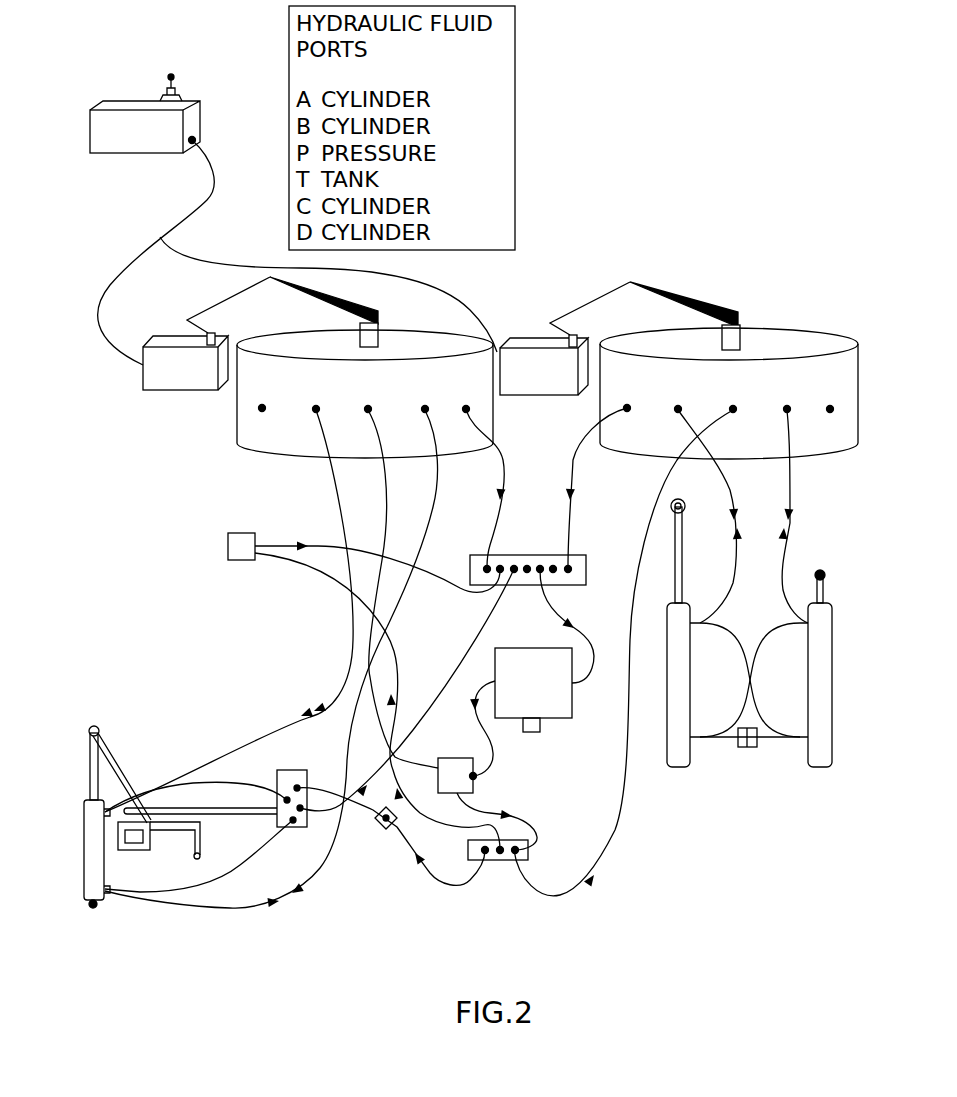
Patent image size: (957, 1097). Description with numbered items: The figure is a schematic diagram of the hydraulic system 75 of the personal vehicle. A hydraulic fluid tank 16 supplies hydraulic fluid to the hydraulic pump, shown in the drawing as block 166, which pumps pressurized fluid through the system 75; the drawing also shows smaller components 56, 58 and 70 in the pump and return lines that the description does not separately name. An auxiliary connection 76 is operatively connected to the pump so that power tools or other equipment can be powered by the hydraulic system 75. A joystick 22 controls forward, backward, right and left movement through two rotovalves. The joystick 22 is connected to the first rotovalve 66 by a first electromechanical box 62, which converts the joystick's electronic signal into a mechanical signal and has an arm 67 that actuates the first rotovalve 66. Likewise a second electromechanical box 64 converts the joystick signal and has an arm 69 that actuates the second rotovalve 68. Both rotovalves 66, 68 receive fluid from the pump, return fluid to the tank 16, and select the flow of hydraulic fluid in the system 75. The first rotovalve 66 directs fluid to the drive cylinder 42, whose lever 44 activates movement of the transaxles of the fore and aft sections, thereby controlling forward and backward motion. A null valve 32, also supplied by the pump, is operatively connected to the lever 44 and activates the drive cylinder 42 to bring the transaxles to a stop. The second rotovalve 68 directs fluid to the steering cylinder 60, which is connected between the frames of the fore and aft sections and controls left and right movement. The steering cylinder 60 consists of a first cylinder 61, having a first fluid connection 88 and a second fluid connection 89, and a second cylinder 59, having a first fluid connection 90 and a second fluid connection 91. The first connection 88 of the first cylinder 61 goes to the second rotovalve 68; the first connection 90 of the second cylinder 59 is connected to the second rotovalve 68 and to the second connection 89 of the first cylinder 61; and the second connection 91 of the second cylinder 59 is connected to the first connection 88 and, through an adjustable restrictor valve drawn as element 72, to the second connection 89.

The joystick 22 is at (125, 145).
The first electromechanical box 62 is at (181, 372).
The second electromechanical box 64 is at (540, 380).
The first rotovalve 66 is at (418, 342).
The second rotovalve 68 is at (770, 342).
The arm 67 is at (302, 297).
The arm 69 is at (654, 295).
The hydraulic system 75 is at (662, 214).
The hydraulic fluid tank 16 is at (525, 556).
The auxiliary connection 76 is at (228, 545).
The hydraulic pump 166 is at (556, 718).
The filter 56 is at (448, 793).
The hydraulic reservoir 58 is at (497, 862).
The null valve 32 is at (293, 770).
The drive cylinder 42 is at (83, 815).
The lever 44 is at (195, 860).
The check valve 70 is at (383, 830).
The first cylinder 61 is at (680, 770).
The second cylinder 59 is at (815, 770).
The first fluid connection 88 is at (697, 630).
The first fluid connection 90 is at (800, 630).
The second fluid connection 89 is at (692, 745).
The second fluid connection 91 is at (805, 745).
The balancing valve 72 is at (748, 750).
The steering cylinder 60 is at (757, 833).